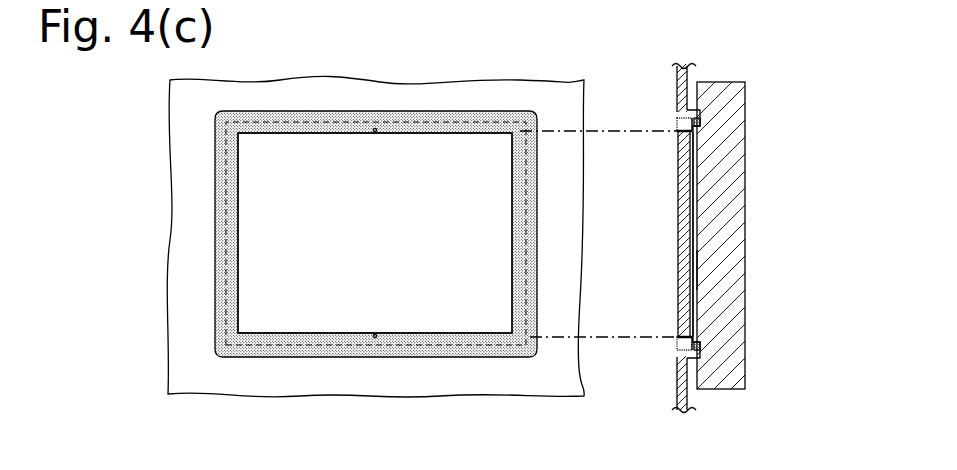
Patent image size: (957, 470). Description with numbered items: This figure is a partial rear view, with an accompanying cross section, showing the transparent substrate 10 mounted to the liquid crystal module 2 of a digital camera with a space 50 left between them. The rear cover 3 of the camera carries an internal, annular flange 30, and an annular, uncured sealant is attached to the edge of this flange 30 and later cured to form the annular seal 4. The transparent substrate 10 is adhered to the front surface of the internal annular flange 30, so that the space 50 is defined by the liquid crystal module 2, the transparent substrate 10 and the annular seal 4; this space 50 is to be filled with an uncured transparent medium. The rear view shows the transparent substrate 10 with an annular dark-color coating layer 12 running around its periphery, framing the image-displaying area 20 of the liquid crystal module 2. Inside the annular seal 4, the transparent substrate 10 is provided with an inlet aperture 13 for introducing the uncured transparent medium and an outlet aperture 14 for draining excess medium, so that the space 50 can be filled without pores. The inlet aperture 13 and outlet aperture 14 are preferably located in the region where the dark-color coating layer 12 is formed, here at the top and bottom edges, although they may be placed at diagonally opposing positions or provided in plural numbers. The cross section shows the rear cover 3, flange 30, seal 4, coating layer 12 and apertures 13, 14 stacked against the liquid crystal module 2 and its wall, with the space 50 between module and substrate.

The liquid crystal module 2 is at (726, 239).
The rear cover 3 is at (195, 239).
The annular seal 4 is at (470, 112).
The transparent substrate 10 is at (388, 239).
The annular dark-color coating layer 12 is at (222, 315).
The inlet aperture 13 is at (376, 340).
The outlet aperture 14 is at (376, 128).
The image-displaying area 20 is at (700, 268).
The internal annular flange 30 is at (432, 111).
The space 50 is at (692, 246).